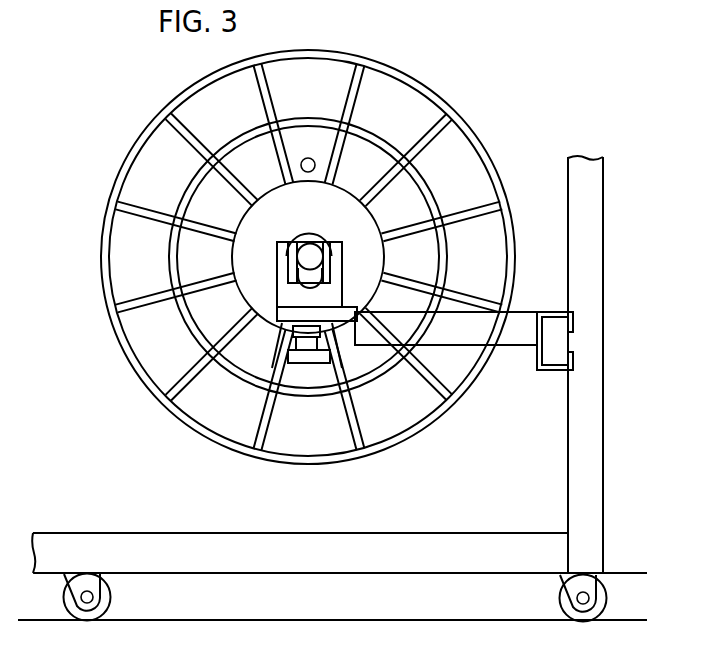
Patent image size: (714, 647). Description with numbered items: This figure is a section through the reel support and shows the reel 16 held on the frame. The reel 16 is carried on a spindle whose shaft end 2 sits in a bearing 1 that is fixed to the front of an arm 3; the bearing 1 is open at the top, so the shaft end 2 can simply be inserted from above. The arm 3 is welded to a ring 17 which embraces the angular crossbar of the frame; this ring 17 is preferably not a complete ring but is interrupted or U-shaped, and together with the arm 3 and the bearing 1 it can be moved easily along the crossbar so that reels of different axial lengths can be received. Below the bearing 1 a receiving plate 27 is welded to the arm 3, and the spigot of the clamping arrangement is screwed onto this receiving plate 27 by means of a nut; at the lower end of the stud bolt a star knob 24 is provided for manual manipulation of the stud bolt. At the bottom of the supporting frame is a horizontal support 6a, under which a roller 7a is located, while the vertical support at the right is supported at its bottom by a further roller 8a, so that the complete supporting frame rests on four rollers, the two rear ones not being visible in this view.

The reel 16 is at (463, 150).
The bearing 1 is at (336, 272).
The shaft end 2 is at (312, 253).
The receiving plate 27 is at (284, 315).
The star knob 24 is at (309, 358).
The arm 3 is at (516, 338).
The ring 17 is at (541, 312).
The horizontal support 6a is at (337, 553).
The roller 7a is at (113, 600).
The roller 8a is at (607, 600).